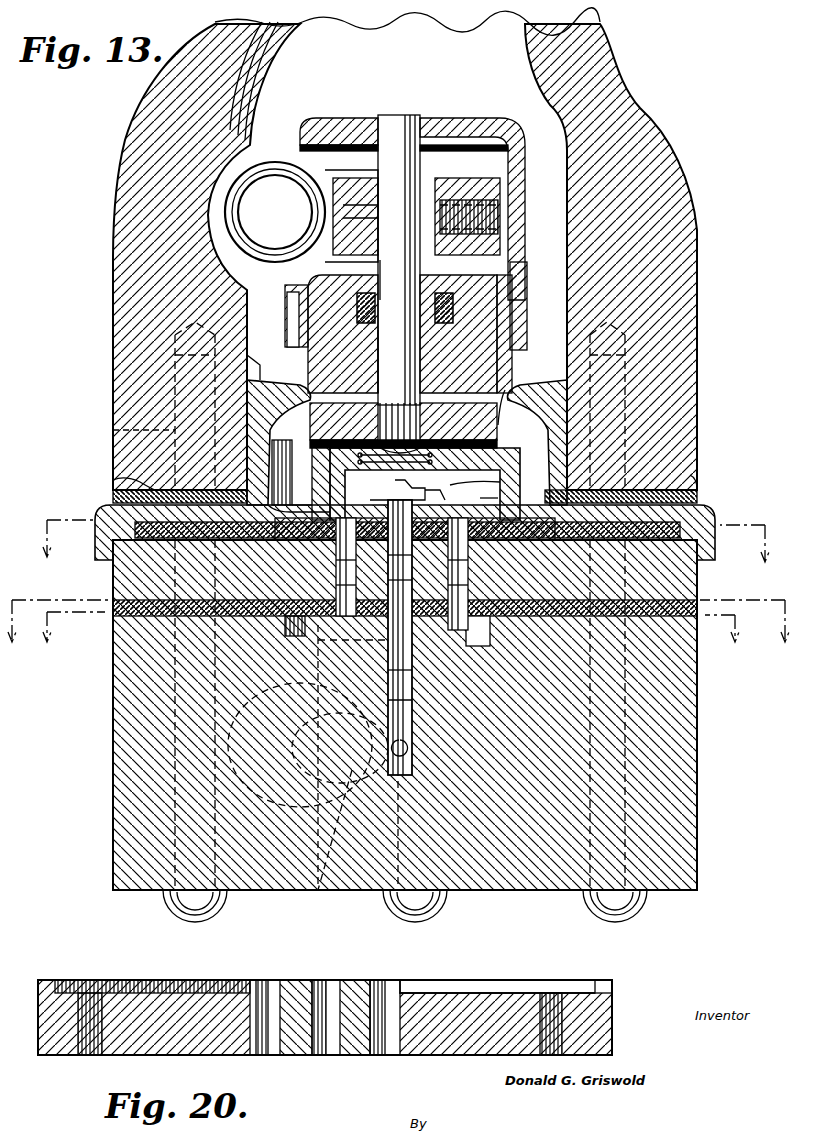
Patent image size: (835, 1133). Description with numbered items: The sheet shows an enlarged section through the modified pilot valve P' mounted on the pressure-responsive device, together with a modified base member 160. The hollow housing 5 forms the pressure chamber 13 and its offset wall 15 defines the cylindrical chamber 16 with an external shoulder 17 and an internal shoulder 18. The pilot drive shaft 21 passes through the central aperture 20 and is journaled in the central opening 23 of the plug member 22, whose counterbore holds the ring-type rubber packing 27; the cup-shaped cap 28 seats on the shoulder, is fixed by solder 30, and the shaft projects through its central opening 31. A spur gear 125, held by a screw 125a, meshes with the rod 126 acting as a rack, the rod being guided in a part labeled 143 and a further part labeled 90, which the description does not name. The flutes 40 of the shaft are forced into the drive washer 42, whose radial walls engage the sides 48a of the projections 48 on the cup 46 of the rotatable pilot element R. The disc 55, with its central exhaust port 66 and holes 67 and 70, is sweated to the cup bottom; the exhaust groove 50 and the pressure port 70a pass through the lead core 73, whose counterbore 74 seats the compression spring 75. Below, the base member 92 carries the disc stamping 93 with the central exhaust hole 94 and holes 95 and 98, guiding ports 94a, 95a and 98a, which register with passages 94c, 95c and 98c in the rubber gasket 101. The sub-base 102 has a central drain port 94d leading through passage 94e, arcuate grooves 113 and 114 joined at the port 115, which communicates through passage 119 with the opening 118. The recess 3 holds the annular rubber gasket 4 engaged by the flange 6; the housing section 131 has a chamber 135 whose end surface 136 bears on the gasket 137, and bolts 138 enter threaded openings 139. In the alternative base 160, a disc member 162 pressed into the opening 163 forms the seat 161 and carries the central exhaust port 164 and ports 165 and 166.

In FIG. 13, the recess 3 is at (680, 530).
In FIG. 13, the annular rubber gasket 4 is at (690, 518).
In FIG. 13, the hollow housing 5 is at (262, 375).
In FIG. 13, the radially extending flange portion 6 is at (697, 475).
In FIG. 13, the pressure chamber 13 is at (520, 420).
In FIG. 13, the longitudinally extending wall 15 is at (406, 550).
In FIG. 13, the cylindrical chamber 16 is at (392, 640).
In FIG. 13, the external shoulder 17 is at (292, 346).
In FIG. 13, the internal shoulder 18 is at (514, 360).
In FIG. 13, the central aperture 20 is at (420, 285).
In FIG. 13, the pilot drive shaft 21 is at (405, 115).
In FIG. 13, the plug member 22 is at (292, 322).
In FIG. 13, the central opening 23 is at (380, 350).
In FIG. 13, the ring-type rubber packing 27 is at (455, 305).
In FIG. 13, the cup-shaped cap 28 is at (340, 118).
In FIG. 13, the solder 30 is at (287, 298).
In FIG. 13, the central opening 31 is at (445, 118).
In FIG. 13, the serrations or flutes 40 is at (400, 403).
In FIG. 13, the drive washer 42 is at (300, 388).
In FIG. 13, the cup 46 is at (318, 478).
In FIG. 13, the longitudinally extending projections 48 is at (480, 440).
In FIG. 13, the sides of projections 48a is at (294, 472).
In FIG. 13, the exhaust groove 50 is at (437, 502).
In FIG. 13, the disc 55 is at (498, 496).
In FIG. 13, the central exhaust port 66 is at (397, 497).
In FIG. 13, the hole 67 is at (483, 480).
In FIG. 13, the hole 70 is at (299, 514).
In FIG. 13, the pressure port 70a is at (299, 502).
In FIG. 13, the lead core 73 is at (480, 468).
In FIG. 13, the central counterbore 74 is at (440, 468).
In FIG. 13, the compression spring 75 is at (390, 456).
In FIG. 13, the wall 90 is at (512, 400).
In FIG. 13, the base member 92 is at (697, 582).
In FIG. 13, the disc stamping 93 is at (490, 520).
In FIG. 13, the central exhaust hole 94 is at (400, 637).
In FIG. 13, the port 94a is at (402, 563).
In FIG. 13, the passage 94c is at (402, 586).
In FIG. 13, the central drain port 94d is at (404, 679).
In FIG. 13, the passage 94e is at (403, 728).
In FIG. 13, the hole 95 is at (470, 534).
In FIG. 13, the port 95a is at (461, 565).
In FIG. 13, the passage 95c is at (460, 590).
In FIG. 13, the hole 98 is at (336, 530).
In FIG. 13, the port 98a is at (349, 565).
In FIG. 13, the passage 98c is at (348, 590).
In FIG. 13, the rubber gasket 101 is at (113, 615).
In FIG. 13, the sub-base 102 is at (113, 810).
In FIG. 13, the arcuate groove 113 is at (286, 636).
In FIG. 13, the arcuate groove 114 is at (470, 646).
In FIG. 13, the port 115 is at (370, 668).
In FIG. 13, the opening 118 is at (228, 752).
In FIG. 13, the passage 119 is at (318, 895).
In FIG. 13, the spur gear 125 is at (470, 178).
In FIG. 13, the screw 125a is at (498, 210).
In FIG. 13, the rod 126 is at (272, 190).
In FIG. 13, the housing section 131 is at (125, 392).
In FIG. 13, the chamber 135 is at (566, 140).
In FIG. 13, the end surface 136 is at (140, 482).
In FIG. 13, the gasket 137 is at (113, 496).
In FIG. 13, the bolts 138 is at (113, 428).
In FIG. 13, the threaded openings 139 is at (190, 343).
In FIG. 13, the boss 143 is at (300, 165).
In FIG. 13, the pilot valve P' is at (428, 334).
In FIG. 13, the rotatable pilot element R is at (311, 493).
In FIG. 20, the base member 160 is at (612, 993).
In FIG. 20, the seat 161 is at (402, 982).
In FIG. 20, the disc member 162 is at (294, 980).
In FIG. 20, the opening 163 is at (248, 998).
In FIG. 20, the central exhaust port 164 is at (332, 982).
In FIG. 20, the port 165 is at (380, 982).
In FIG. 20, the port 166 is at (262, 980).